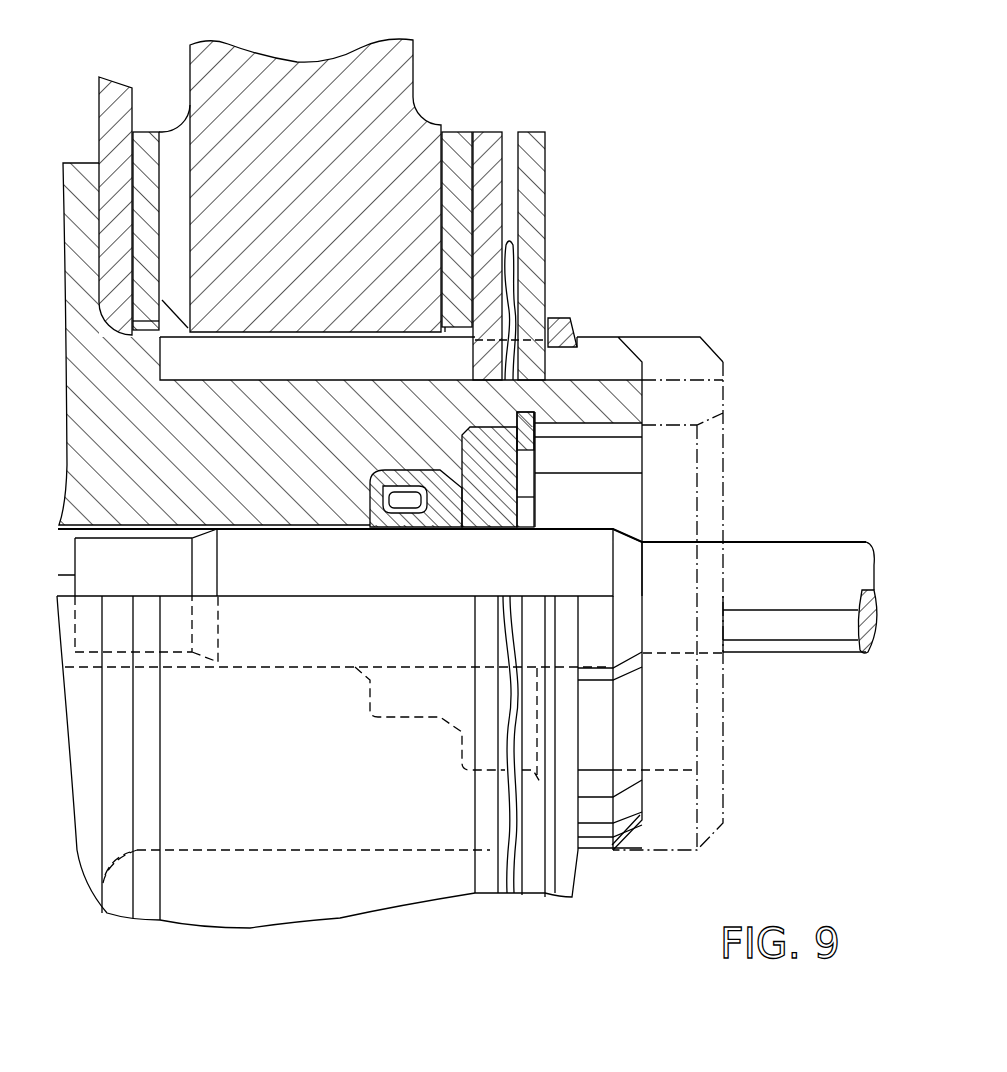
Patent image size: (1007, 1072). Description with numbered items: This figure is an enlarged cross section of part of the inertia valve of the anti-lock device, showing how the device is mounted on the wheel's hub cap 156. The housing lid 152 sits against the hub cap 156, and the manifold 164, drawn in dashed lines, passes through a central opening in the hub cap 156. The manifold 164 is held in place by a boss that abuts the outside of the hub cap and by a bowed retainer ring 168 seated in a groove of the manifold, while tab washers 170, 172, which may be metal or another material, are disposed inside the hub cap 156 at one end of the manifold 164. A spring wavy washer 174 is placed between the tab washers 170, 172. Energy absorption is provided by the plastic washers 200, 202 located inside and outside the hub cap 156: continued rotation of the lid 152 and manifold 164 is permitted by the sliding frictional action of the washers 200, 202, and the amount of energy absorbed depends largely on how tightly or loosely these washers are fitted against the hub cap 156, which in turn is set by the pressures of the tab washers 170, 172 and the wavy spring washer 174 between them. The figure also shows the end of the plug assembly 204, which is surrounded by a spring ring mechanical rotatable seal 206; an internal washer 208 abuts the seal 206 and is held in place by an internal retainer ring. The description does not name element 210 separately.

The lid 152 is at (117, 86).
The hub cap 156 is at (278, 62).
The plastic washer 200 is at (150, 132).
The plastic washer 202 is at (458, 132).
The tab washer 170 is at (483, 132).
The tab washer 172 is at (540, 132).
The spring wavy washer 174 is at (514, 260).
The bowed retainer ring 168 is at (558, 318).
The manifold 164 is at (707, 345).
The internal washer 208 is at (487, 425).
The shim 210 is at (516, 414).
The spring ring mechanical rotatable seal 206 is at (393, 528).
The plug assembly 204 is at (625, 548).